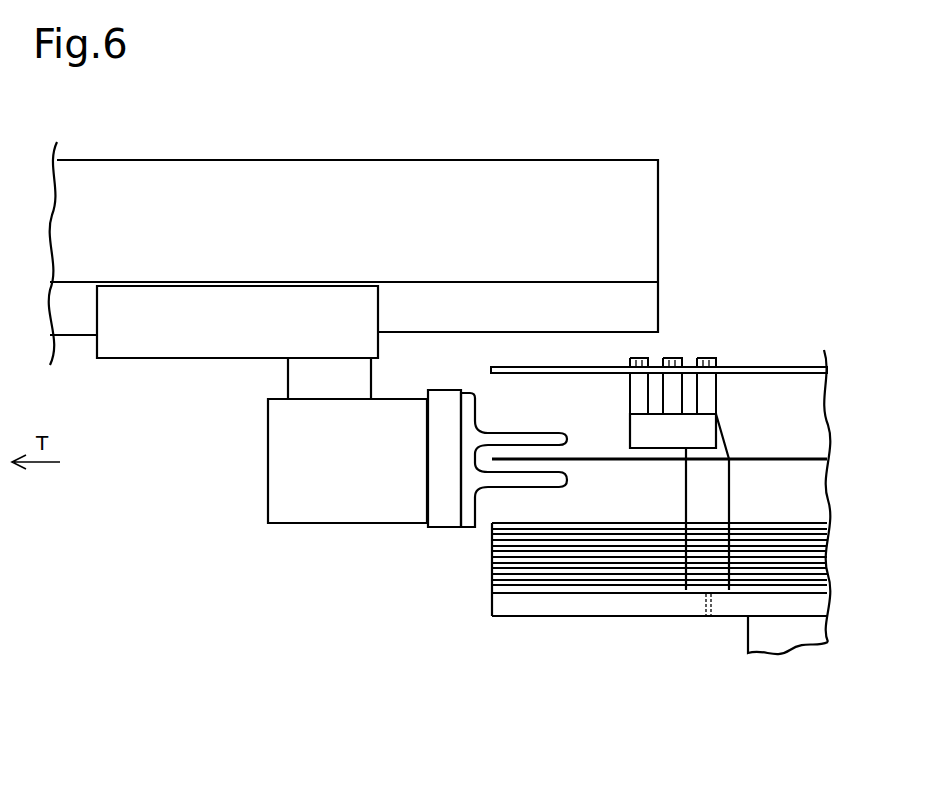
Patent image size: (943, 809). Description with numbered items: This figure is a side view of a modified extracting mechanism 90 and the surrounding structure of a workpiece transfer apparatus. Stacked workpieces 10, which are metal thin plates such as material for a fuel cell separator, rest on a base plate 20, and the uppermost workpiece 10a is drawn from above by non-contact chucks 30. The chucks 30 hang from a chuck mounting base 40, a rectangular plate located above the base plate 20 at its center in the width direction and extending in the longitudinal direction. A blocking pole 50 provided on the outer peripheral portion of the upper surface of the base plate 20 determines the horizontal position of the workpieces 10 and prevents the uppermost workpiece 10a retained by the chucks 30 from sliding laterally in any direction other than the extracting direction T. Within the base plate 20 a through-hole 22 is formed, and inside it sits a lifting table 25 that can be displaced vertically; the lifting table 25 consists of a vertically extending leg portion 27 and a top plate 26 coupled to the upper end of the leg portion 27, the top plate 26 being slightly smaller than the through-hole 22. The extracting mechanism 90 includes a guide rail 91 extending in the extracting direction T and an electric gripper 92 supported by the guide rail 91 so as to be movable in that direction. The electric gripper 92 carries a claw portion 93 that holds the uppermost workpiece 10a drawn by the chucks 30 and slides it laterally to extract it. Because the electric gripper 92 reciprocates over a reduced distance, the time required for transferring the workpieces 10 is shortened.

The workpiece 10 is at (492, 534).
The uppermost workpiece 10a is at (772, 458).
The base plate 20 is at (533, 617).
The through-hole 22 is at (711, 618).
The lifting table 25 is at (746, 672).
The top plate 26 is at (722, 617).
The leg portion 27 is at (746, 638).
The non-contact chuck 30 is at (618, 420).
The chuck mounting base 40 is at (770, 366).
The blocking pole 50 is at (729, 494).
The extracting mechanism 90 is at (353, 334).
The guide rail 91 is at (72, 326).
The electric gripper 92 is at (268, 426).
The claw portion 93 is at (540, 487).